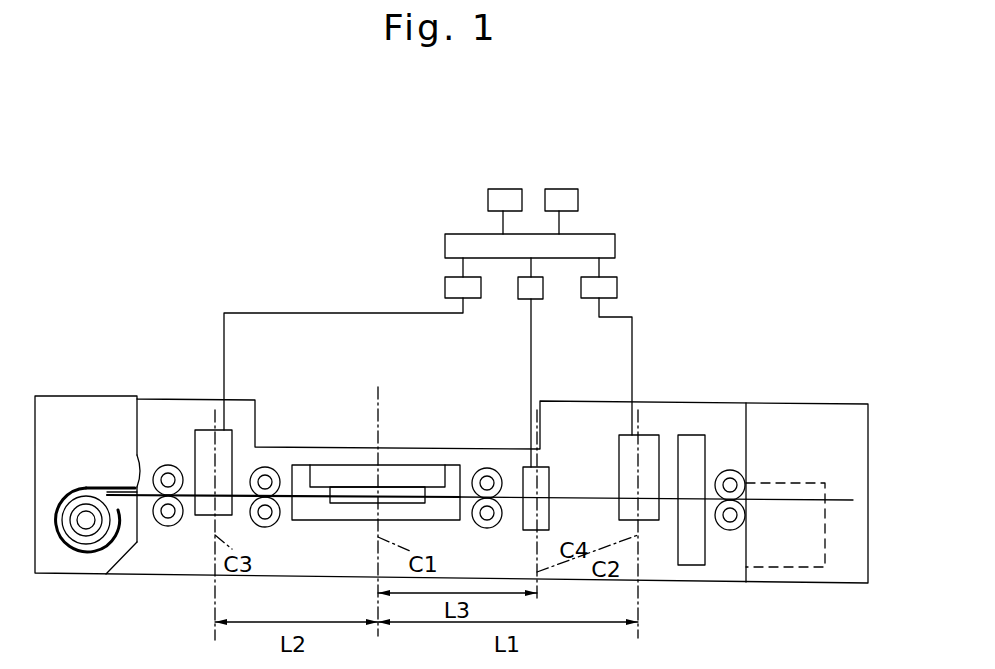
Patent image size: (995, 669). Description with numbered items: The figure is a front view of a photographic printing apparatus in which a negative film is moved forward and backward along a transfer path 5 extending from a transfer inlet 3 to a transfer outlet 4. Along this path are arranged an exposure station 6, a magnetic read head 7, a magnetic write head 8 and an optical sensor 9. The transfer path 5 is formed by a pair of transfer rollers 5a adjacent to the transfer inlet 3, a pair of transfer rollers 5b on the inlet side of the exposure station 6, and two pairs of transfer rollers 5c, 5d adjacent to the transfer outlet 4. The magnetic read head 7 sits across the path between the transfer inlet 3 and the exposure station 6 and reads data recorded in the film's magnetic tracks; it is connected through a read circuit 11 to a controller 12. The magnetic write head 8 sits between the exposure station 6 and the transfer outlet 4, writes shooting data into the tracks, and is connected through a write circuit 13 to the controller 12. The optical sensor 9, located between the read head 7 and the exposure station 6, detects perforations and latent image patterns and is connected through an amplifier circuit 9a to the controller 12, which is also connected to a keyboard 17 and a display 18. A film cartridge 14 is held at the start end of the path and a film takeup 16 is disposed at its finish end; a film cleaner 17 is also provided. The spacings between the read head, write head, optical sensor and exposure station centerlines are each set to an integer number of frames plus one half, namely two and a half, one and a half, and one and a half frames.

The transfer inlet 3 is at (745, 493).
The transfer outlet 4 is at (137, 455).
The transfer path 5 is at (515, 490).
The pair of transfer rollers 5a is at (732, 530).
The pair of transfer rollers 5b is at (488, 528).
The pair of transfer rollers 5c is at (263, 467).
The pair of transfer rollers 5d is at (168, 527).
The exposure station 6 is at (335, 467).
The magnetic read head 7 is at (650, 443).
The magnetic write head 8 is at (202, 435).
The optical sensor 9 is at (550, 467).
The amplifier circuit 9a is at (523, 294).
The read circuit 11 is at (613, 283).
The controller 12 is at (607, 243).
The write circuit 13 is at (446, 283).
The film cartridge 14 is at (780, 481).
The film takeup 16 is at (83, 550).
The keyboard 17 is at (507, 192).
The display 18 is at (562, 192).